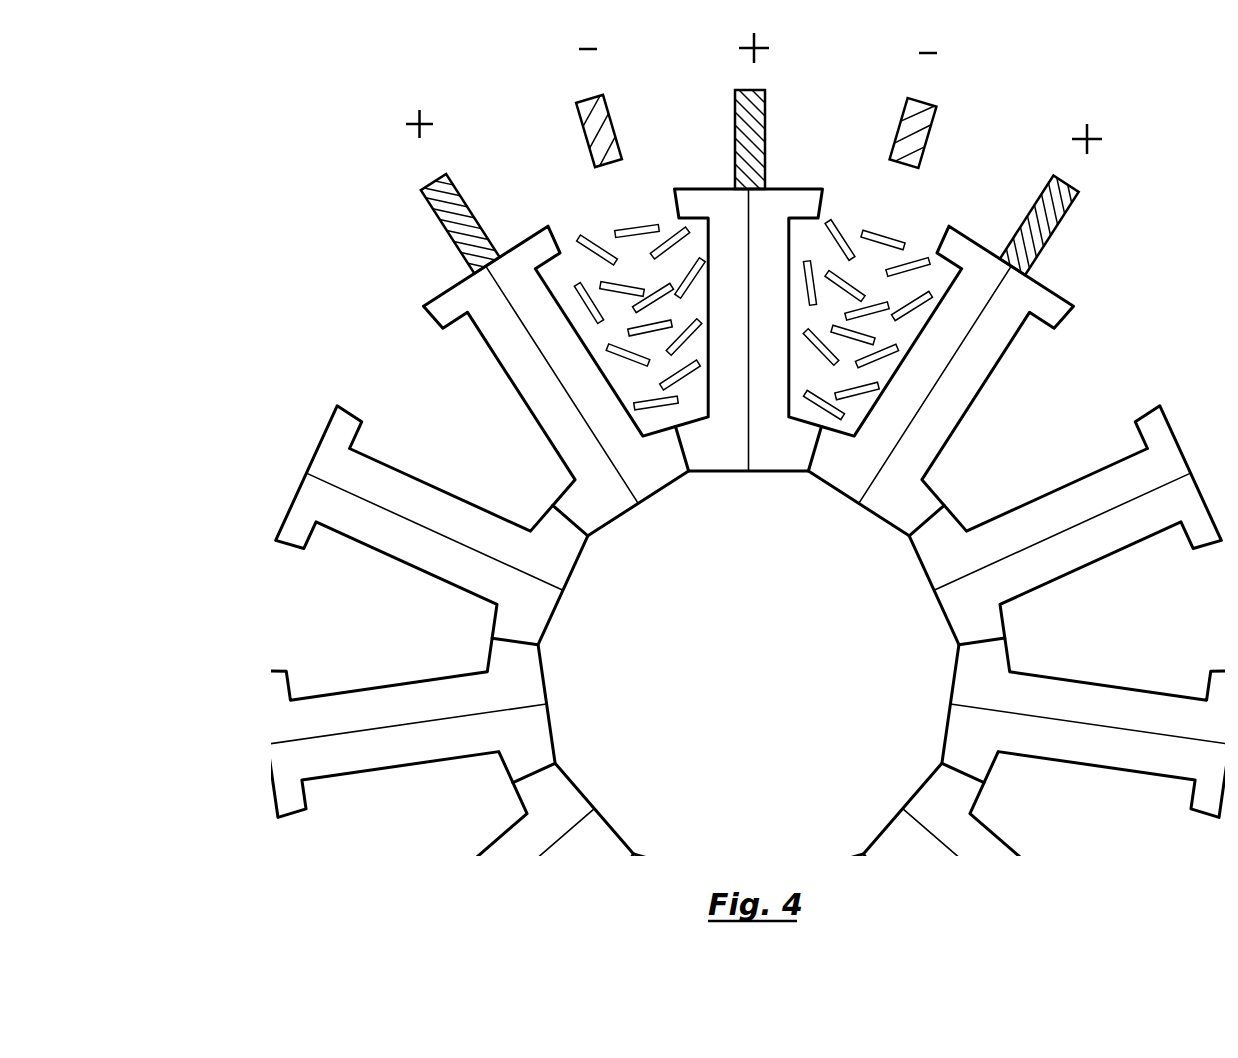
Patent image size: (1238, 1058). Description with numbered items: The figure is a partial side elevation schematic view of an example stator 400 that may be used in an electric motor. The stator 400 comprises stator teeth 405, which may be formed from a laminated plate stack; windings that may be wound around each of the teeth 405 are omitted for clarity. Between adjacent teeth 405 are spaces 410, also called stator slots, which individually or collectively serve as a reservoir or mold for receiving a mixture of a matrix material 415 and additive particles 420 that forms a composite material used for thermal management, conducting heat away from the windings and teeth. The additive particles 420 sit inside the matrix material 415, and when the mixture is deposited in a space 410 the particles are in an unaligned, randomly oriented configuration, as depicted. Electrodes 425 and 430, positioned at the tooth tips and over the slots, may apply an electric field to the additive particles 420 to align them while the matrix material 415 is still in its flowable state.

The stator 400 is at (660, 538).
The stator teeth 405 is at (457, 288).
The spaces 410 is at (637, 378).
The matrix material 415 is at (640, 273).
The additive particles 420 is at (652, 224).
The electrode 425 is at (452, 233).
The electrode 430 is at (583, 138).